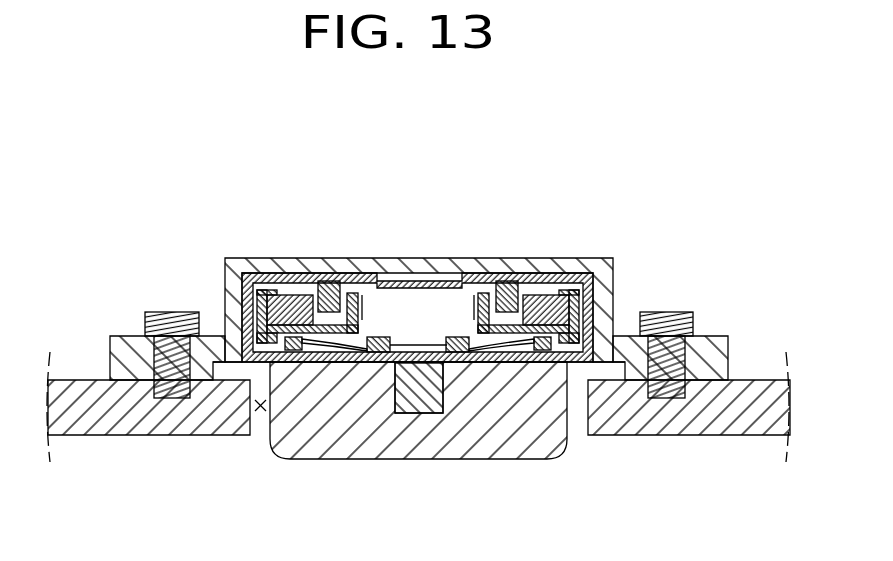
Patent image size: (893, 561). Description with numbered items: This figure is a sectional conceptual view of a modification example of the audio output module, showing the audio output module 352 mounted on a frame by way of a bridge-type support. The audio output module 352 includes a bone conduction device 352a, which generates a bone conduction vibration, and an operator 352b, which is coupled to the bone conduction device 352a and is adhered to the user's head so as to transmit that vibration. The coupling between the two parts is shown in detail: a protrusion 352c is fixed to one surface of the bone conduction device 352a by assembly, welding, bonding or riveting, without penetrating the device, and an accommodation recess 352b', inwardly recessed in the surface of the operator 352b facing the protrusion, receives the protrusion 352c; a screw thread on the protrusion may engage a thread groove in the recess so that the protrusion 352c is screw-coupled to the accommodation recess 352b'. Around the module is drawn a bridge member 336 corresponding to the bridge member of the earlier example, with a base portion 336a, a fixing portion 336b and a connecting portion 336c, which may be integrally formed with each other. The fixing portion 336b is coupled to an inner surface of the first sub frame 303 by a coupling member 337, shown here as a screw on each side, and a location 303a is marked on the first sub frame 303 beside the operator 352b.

The bracket plate 303 is at (765, 420).
The mounting point of bracket plate 303a is at (261, 412).
The camera housing assembly 336 is at (325, 176).
The housing cover 336a is at (348, 265).
The inner housing 336b is at (621, 335).
The housing flange 336c is at (713, 340).
The screw 337 is at (168, 317).
The audio output module 352 is at (545, 507).
The bone conduction device 352a is at (480, 350).
The operator 352b is at (418, 436).
The accommodation recess 352b' is at (383, 437).
The protrusion 352c is at (413, 398).